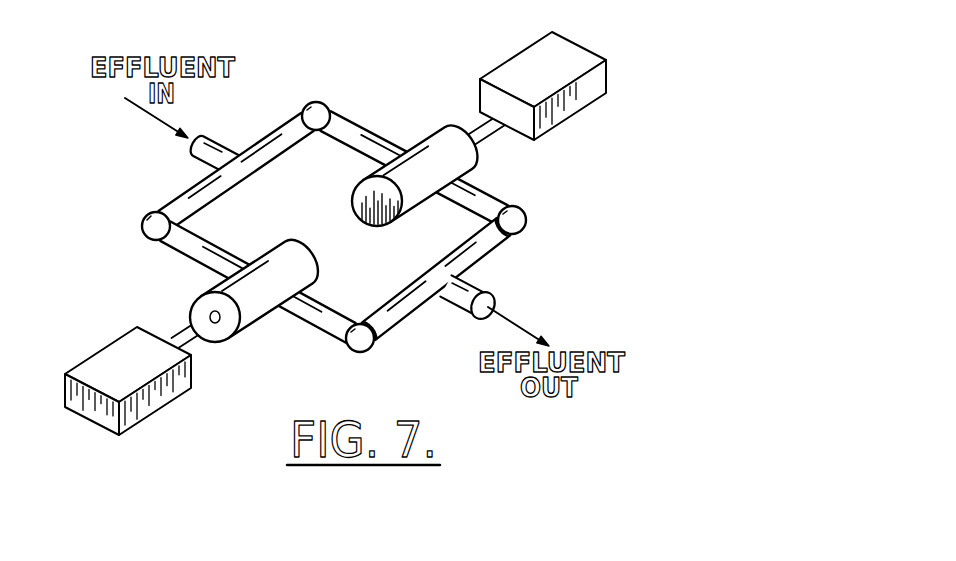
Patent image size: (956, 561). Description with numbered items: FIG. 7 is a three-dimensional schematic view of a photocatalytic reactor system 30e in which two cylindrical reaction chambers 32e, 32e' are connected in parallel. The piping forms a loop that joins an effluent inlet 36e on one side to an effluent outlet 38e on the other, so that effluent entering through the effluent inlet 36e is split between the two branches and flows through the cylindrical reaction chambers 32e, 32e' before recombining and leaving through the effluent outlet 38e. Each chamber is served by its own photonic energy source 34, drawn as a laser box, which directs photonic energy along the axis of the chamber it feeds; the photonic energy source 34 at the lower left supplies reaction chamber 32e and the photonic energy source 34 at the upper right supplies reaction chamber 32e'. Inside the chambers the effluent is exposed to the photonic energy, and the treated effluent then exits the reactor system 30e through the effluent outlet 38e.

The reactor system 30e is at (720, 76).
The cylindrical reaction chamber 32e is at (245, 310).
The cylindrical reaction chamber 32e' is at (450, 169).
The photonic energy source 34 is at (570, 43).
The effluent inlet 36e is at (194, 150).
The effluent outlet 38e is at (482, 290).